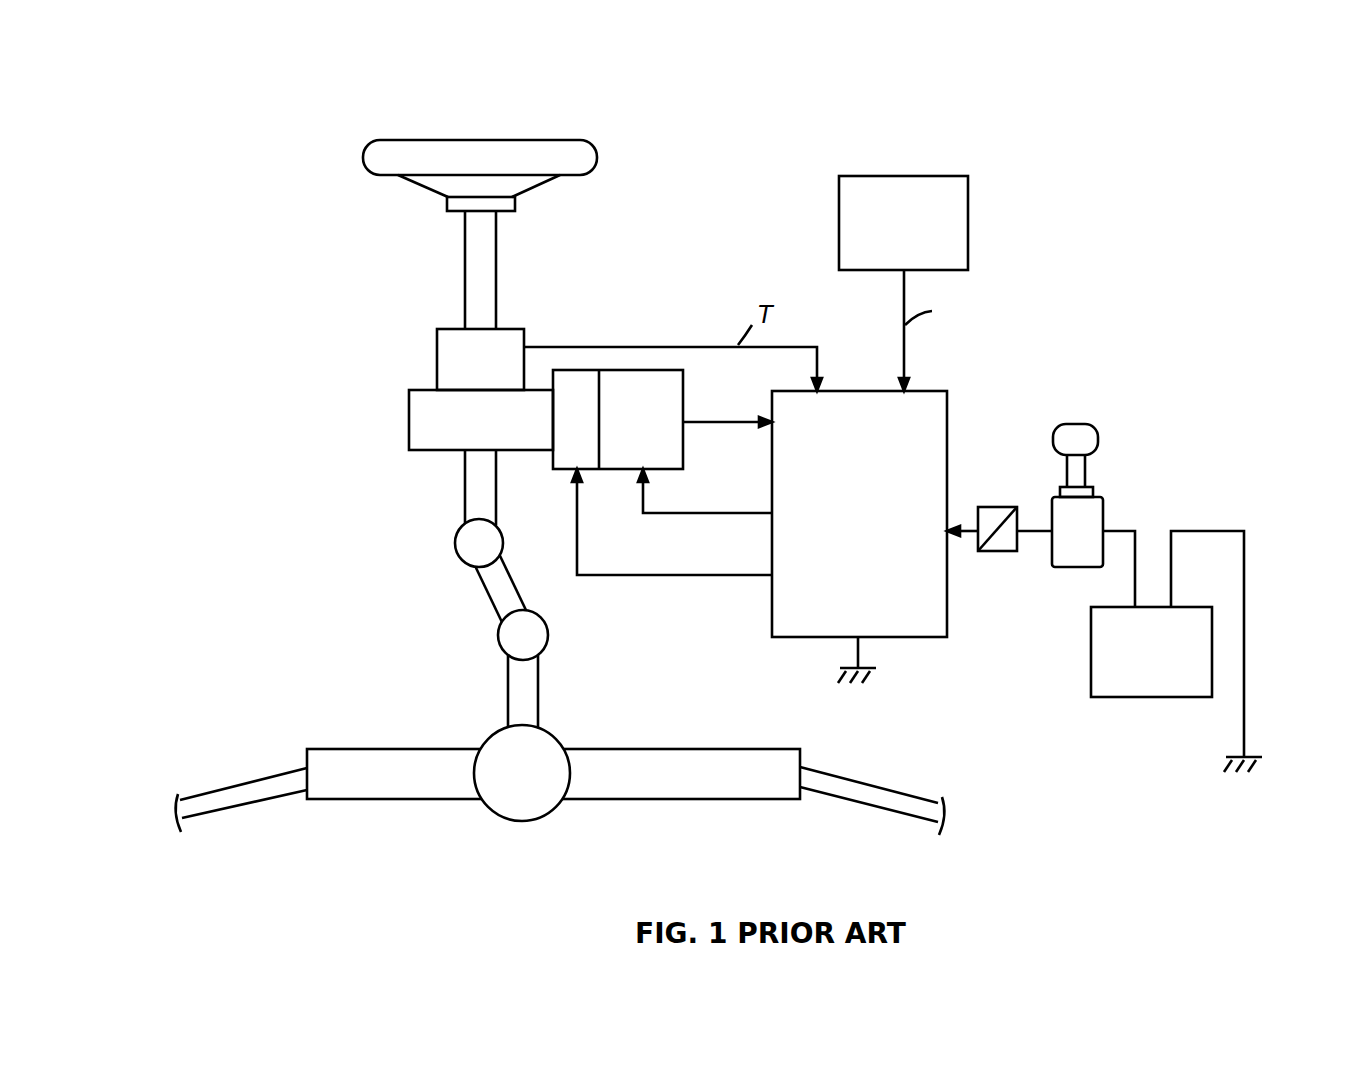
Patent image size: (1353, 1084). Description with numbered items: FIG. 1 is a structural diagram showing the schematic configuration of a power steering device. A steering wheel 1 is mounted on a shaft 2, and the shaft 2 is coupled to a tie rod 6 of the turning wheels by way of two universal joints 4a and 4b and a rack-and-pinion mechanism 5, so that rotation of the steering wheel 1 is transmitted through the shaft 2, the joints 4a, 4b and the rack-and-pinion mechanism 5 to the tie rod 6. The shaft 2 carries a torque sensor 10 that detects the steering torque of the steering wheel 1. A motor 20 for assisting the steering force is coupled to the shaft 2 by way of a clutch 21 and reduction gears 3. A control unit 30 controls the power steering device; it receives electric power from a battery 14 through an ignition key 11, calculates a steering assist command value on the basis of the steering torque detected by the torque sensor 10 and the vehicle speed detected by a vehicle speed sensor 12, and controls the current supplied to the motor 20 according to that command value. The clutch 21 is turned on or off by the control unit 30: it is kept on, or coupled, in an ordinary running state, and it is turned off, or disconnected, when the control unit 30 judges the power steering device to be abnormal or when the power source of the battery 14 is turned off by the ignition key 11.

The steering wheel 1 is at (603, 156).
The shaft 2 is at (465, 270).
The reduction gears 3 is at (409, 423).
The universal joint 4a is at (455, 540).
The universal joint 4b is at (498, 638).
The rack-and-pinion mechanism 5 is at (564, 734).
The tie rod 6 is at (880, 790).
The torque sensor 10 is at (437, 355).
The ignition key 11 is at (1098, 432).
The vehicle speed sensor 12 is at (937, 176).
The battery 14 is at (1113, 690).
The motor 20 is at (650, 368).
The clutch 21 is at (575, 368).
The control unit 30 is at (940, 391).